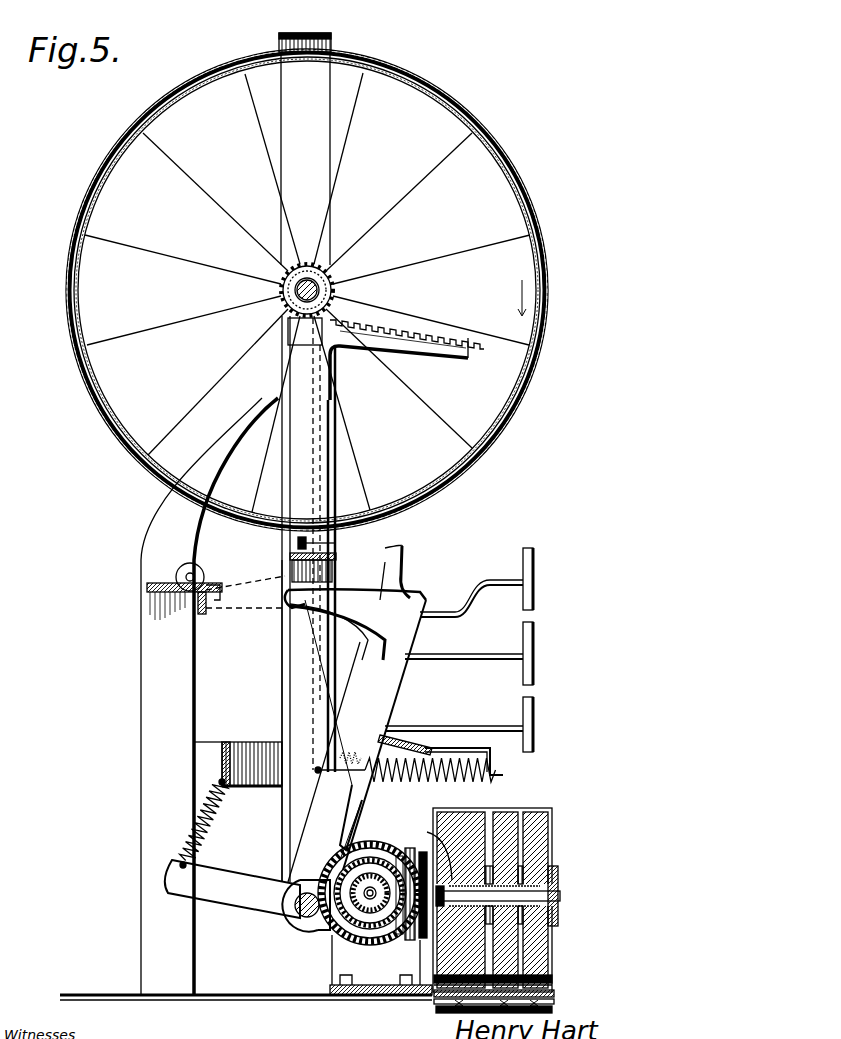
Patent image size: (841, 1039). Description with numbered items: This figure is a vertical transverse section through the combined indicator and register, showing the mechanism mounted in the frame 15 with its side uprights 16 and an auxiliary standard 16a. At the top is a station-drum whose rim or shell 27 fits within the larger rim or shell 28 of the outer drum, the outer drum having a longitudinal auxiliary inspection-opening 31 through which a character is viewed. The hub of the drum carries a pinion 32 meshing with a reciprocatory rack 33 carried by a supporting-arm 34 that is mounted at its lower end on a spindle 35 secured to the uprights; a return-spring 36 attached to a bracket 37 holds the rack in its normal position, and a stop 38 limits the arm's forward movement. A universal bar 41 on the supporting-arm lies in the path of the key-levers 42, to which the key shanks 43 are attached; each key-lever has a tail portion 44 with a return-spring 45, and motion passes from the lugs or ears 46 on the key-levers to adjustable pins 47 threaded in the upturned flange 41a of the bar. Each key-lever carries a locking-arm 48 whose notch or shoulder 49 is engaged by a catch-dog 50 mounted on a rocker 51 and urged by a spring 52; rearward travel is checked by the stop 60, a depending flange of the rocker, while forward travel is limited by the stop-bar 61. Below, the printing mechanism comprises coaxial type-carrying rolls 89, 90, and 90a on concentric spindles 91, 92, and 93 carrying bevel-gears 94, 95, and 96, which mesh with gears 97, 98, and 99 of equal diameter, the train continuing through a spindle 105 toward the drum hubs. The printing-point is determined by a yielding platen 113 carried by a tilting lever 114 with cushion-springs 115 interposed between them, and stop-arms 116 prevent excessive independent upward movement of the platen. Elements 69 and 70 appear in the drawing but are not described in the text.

The frame 15 is at (305, 32).
The side uprights 16 is at (332, 173).
The auxiliary standard 16a is at (142, 512).
The rim or shell 27 is at (417, 85).
The rim or shell 28 is at (412, 74).
The auxiliary inspection-opening 31 is at (548, 303).
The pinion 32 is at (334, 283).
The reciprocatory rack 33 is at (423, 337).
The supporting-arm 34 is at (284, 832).
The spindle 35 is at (296, 916).
The return-spring 36 is at (395, 782).
The bracket 37 is at (492, 770).
The stop 38 is at (338, 392).
The universal bar 41 is at (289, 558).
The upturned flange 41a is at (384, 560).
The key-levers 42 is at (394, 680).
The shanks 43 is at (465, 654).
The extension or tail portion 44 is at (222, 898).
The return-spring 45 is at (208, 826).
The lugs or ears 46 is at (396, 549).
The adjustable pins 47 is at (297, 541).
The locking-arm 48 is at (238, 638).
The notch or shoulder 49 is at (283, 604).
The catch-dog 50 is at (214, 590).
The rocker 51 is at (205, 582).
The spring 52 is at (181, 569).
The stop 60 is at (203, 614).
The stop-bar 61 is at (405, 740).
The base plate 69 is at (556, 986).
The plate 70 is at (554, 978).
The type-carrying roll 89 is at (466, 806).
The type-carrying roll 90 is at (509, 806).
The type-carrying roll 90a is at (545, 806).
The spindle 91 is at (428, 833).
The spindle 92 is at (526, 868).
The spindle 93 is at (546, 896).
The bevel-gear 94 is at (408, 852).
The bevel-gear 95 is at (398, 936).
The bevel-gear 96 is at (390, 940).
The gear 97 is at (356, 944).
The gear 98 is at (334, 930).
The gear 99 is at (341, 873).
The spindle 105 is at (345, 660).
The yielding platen 113 is at (557, 1001).
The tilting lever 114 is at (440, 1013).
The cushion-springs 115 is at (556, 1009).
The stop-arms 116 is at (556, 993).